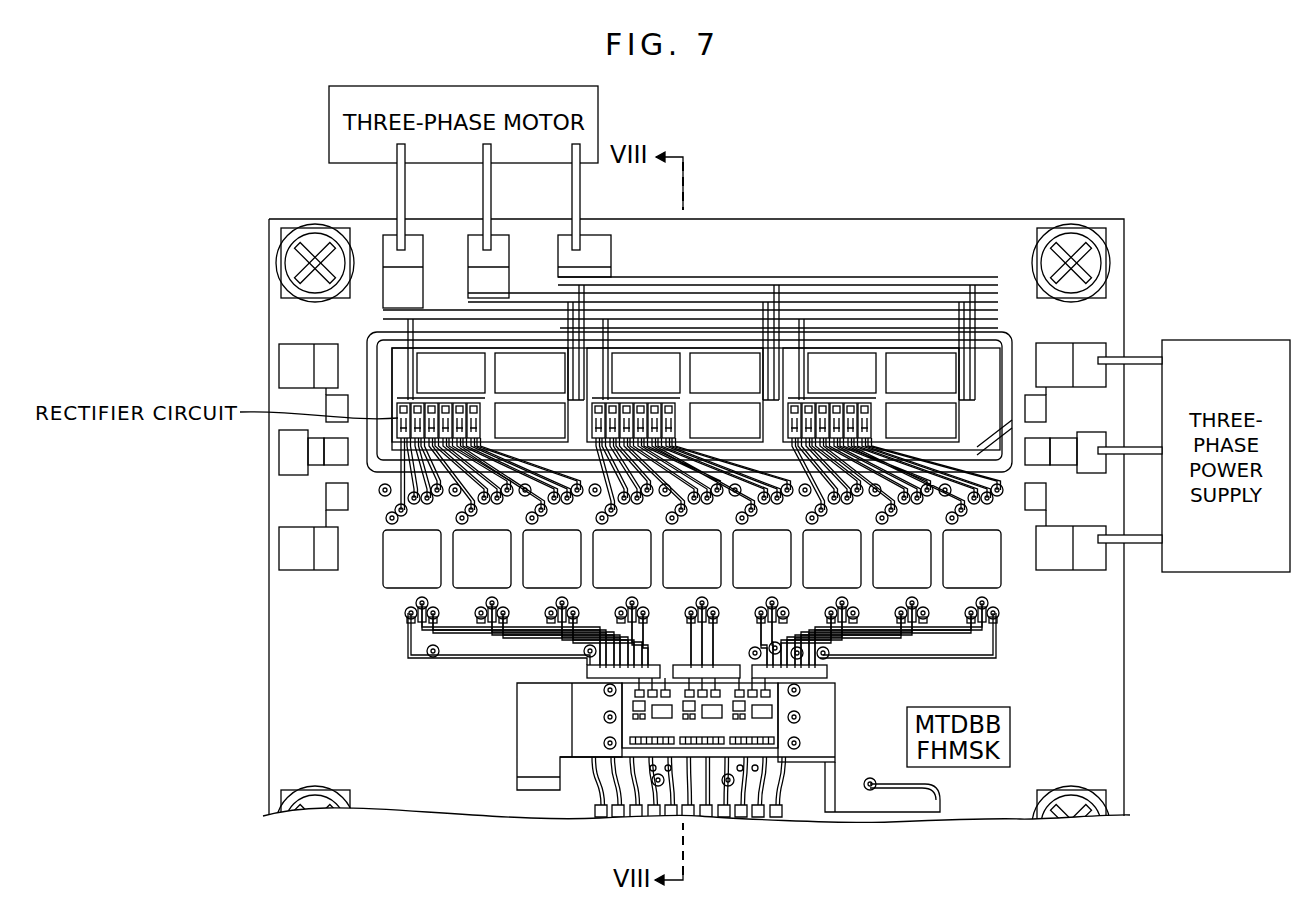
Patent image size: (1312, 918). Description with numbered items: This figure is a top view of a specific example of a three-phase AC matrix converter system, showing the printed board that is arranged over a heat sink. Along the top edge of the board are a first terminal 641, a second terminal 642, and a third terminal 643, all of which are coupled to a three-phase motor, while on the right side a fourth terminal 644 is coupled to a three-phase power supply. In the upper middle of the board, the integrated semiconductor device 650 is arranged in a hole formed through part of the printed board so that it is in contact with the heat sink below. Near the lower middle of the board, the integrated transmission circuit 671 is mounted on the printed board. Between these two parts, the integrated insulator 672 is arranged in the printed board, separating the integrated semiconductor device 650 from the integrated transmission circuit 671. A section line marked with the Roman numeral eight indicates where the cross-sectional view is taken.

The first terminal 641 is at (415, 248).
The second terminal 642 is at (500, 248).
The third terminal 643 is at (590, 248).
The fourth terminal 644 is at (1097, 557).
The integrated semiconductor device 650 is at (728, 335).
The integrated transmission circuit 671 is at (608, 742).
The integrated insulator 672 is at (392, 573).